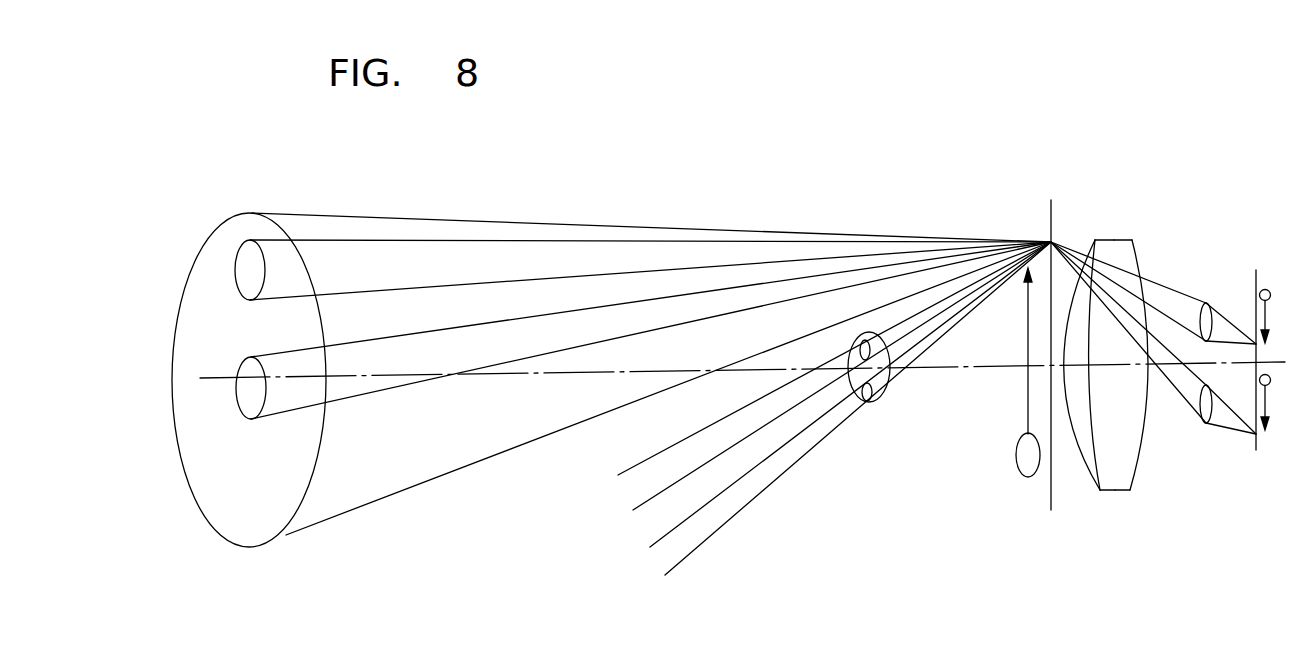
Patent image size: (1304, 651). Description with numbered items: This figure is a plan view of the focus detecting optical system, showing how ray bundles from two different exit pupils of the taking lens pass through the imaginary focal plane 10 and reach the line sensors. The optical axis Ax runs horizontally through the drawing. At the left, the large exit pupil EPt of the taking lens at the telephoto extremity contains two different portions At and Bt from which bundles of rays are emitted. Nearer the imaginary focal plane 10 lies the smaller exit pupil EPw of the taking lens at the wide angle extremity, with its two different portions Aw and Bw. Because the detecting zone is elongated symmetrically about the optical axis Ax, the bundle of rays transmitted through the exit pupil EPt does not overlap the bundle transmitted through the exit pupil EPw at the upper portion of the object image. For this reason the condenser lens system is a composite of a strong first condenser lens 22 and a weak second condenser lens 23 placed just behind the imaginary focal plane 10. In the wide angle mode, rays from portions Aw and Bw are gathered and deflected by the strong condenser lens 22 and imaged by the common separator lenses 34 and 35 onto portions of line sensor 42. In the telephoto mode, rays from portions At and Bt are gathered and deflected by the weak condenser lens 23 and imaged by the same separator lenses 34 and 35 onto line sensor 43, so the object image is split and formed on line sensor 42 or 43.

The imaginary focal plane 10 is at (1051, 500).
The first condenser lens 22 is at (1095, 483).
The second condenser lens 23 is at (1127, 492).
The separator lens 34 is at (1207, 423).
The separator lens 35 is at (1207, 303).
The line sensor 42 is at (1256, 450).
The line sensor 43 is at (1230, 403).
The portion of exit pupil EPt At is at (250, 278).
The portion of exit pupil EPt Bt is at (250, 407).
The exit pupil at telephoto extremity EPt is at (288, 518).
The portion of exit pupil EPw Aw is at (863, 346).
The portion of exit pupil EPw Bw is at (866, 401).
The exit pupil at wide angle extremity EPw is at (880, 400).
The optical axis Ax is at (988, 365).